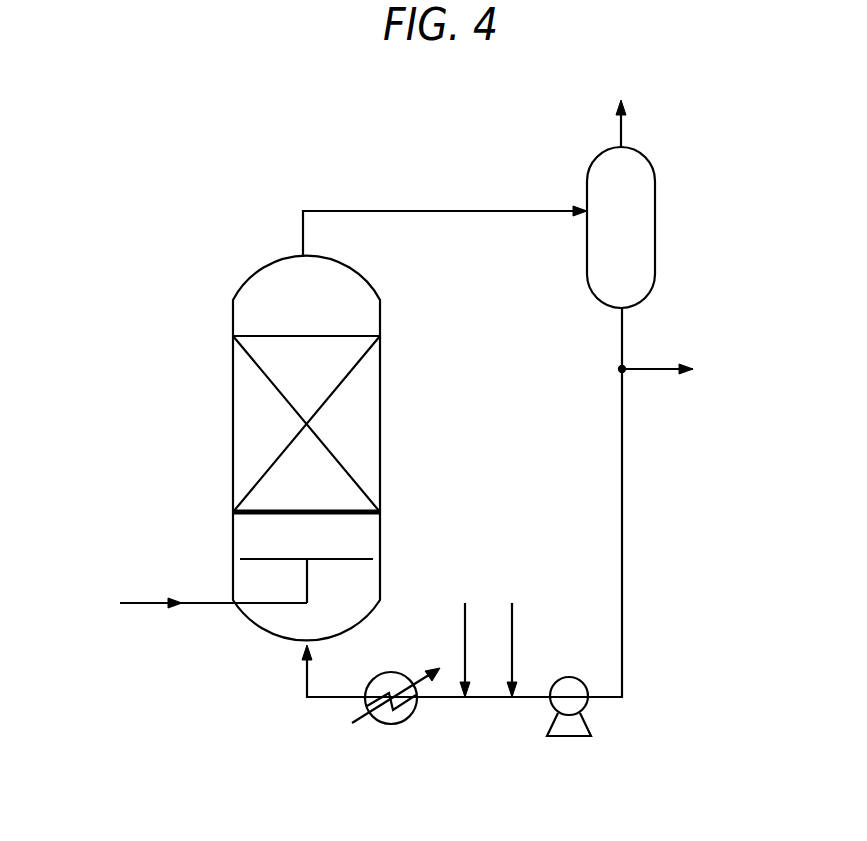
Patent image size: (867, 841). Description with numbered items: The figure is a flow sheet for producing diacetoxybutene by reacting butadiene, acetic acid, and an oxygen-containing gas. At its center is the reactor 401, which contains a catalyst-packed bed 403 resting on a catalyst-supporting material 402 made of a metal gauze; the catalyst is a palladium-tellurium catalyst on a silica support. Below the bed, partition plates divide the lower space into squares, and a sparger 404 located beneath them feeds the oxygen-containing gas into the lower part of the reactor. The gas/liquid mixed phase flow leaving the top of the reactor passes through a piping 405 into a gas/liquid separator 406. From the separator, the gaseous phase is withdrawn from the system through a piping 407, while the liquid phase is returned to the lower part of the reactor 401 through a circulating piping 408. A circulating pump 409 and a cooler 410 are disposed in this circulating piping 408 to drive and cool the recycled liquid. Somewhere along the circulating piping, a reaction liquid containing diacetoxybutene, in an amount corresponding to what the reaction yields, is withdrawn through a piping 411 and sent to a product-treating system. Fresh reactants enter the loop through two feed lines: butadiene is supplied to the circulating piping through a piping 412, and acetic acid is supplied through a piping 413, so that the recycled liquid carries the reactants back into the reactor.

The reactor 401 is at (380, 315).
The catalyst-supporting material 402 is at (379, 513).
The catalyst-packed bed 403 is at (365, 423).
The sparger 404 is at (260, 558).
The piping 405 is at (452, 210).
The gas/liquid separator 406 is at (655, 227).
The piping 407 is at (621, 132).
The circulating piping 408 is at (622, 533).
The circulating pump 409 is at (567, 677).
The cooler 410 is at (388, 672).
The piping 411 is at (655, 368).
The piping 412 is at (512, 612).
The piping 413 is at (465, 607).